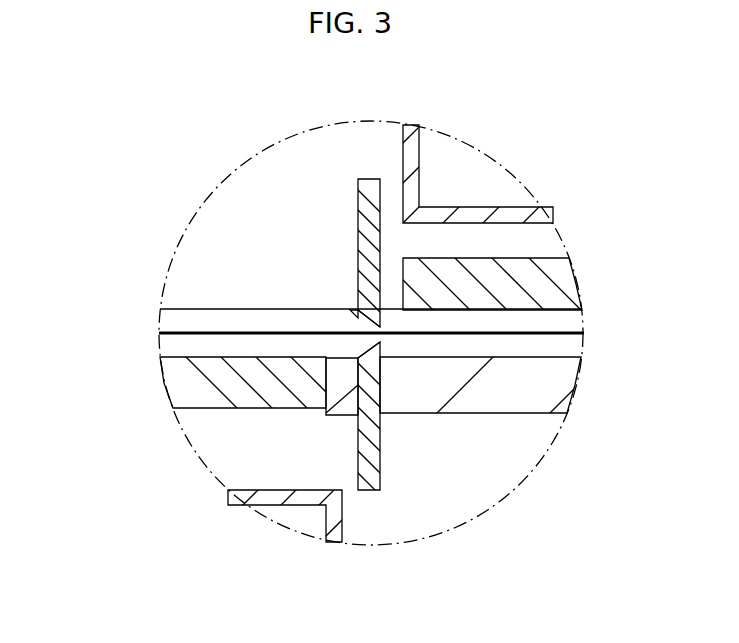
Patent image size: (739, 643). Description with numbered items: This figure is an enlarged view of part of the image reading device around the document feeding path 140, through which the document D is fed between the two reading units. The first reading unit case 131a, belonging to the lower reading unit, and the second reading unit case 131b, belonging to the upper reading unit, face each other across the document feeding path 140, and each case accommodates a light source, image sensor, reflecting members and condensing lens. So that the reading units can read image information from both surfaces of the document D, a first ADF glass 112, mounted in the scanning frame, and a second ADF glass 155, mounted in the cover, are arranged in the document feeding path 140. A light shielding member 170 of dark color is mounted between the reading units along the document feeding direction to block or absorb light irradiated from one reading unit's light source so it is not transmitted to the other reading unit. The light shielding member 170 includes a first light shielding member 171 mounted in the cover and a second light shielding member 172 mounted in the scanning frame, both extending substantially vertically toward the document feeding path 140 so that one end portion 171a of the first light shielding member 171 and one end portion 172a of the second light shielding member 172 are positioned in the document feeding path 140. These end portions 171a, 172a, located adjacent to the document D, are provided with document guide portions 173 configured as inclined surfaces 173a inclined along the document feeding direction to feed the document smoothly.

The first ADF glass 112 is at (196, 401).
The first reading unit case 131a is at (323, 517).
The second reading unit case 131b is at (402, 146).
The document feeding path 140 is at (228, 322).
The second ADF glass 155 is at (541, 258).
The light shielding member 170 is at (349, 386).
The first light shielding member 171 is at (358, 214).
The one end portion of the first light shielding member 171a is at (381, 328).
The second light shielding member 172 is at (381, 493).
The one end portion of the second light shielding member 172a is at (382, 342).
The document guide portion 173 is at (212, 341).
The inclined surface 173a is at (354, 311).
The document D is at (192, 328).